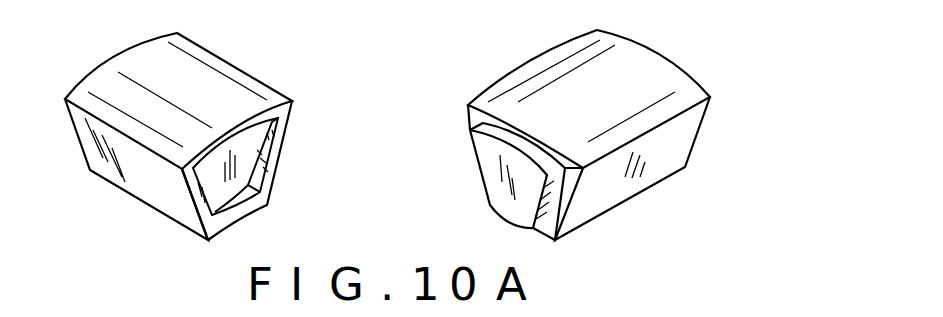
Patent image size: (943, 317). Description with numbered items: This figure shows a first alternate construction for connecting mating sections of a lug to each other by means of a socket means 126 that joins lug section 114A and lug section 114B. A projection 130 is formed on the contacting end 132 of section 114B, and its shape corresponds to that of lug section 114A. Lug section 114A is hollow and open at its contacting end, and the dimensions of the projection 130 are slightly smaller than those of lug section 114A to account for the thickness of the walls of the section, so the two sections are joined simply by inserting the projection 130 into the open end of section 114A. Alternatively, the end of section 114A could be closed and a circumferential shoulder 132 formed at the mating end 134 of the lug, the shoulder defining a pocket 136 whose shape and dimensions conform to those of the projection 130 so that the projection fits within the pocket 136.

The lug section 114A is at (125, 50).
The lug section 114B is at (550, 58).
The socket means 126 is at (289, 212).
The projection 130 is at (522, 187).
The contacting end 132 is at (287, 141).
The mating end 134 is at (187, 190).
The pocket 136 is at (240, 152).